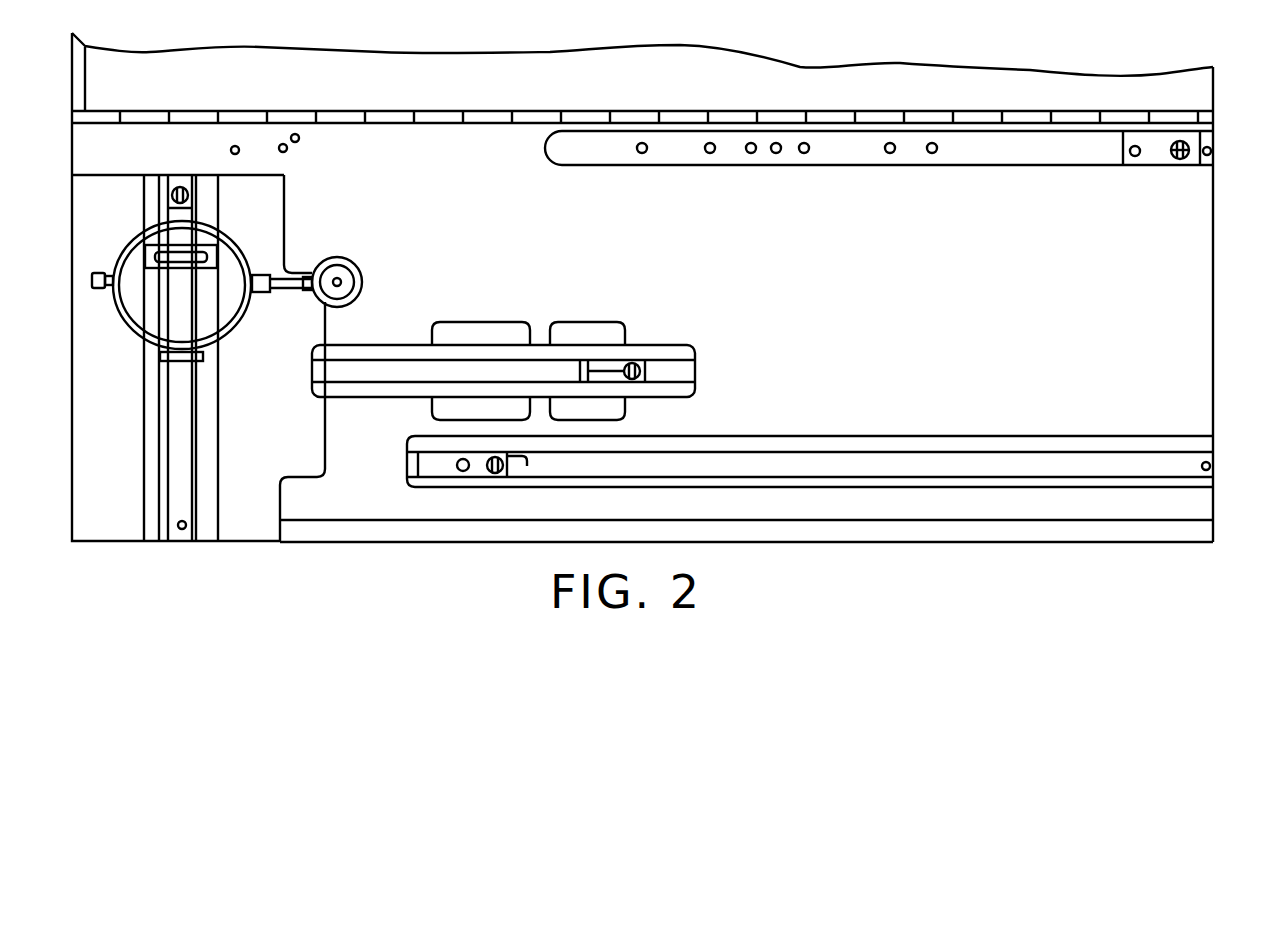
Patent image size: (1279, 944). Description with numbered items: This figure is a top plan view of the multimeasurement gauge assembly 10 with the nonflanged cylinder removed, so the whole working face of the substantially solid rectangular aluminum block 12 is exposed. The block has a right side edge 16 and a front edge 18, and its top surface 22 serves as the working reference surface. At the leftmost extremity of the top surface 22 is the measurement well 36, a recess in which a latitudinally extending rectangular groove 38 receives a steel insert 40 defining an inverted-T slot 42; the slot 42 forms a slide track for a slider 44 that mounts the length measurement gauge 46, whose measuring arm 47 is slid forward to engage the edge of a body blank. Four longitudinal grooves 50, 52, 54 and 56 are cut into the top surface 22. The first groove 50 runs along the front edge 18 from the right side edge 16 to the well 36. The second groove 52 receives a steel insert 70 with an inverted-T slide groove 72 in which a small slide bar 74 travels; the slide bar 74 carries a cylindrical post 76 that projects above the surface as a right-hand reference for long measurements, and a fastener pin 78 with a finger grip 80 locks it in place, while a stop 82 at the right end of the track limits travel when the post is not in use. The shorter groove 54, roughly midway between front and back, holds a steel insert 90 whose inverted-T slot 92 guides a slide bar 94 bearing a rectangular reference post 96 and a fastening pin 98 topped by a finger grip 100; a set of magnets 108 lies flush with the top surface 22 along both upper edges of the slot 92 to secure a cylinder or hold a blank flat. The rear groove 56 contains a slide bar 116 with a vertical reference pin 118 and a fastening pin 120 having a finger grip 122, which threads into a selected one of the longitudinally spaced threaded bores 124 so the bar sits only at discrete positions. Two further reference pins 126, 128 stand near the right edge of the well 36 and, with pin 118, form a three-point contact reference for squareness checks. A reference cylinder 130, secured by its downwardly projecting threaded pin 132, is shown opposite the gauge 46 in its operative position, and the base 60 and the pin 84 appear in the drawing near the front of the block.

The multimeasurement gauge assembly 10 is at (178, 50).
The aluminum block 12 is at (1213, 215).
The right side edge 16 is at (1213, 357).
The front edge 18 is at (105, 543).
The top surface 22 is at (488, 150).
The measurement well 36 is at (284, 211).
The groove 38 is at (220, 436).
The steel insert 40 is at (205, 415).
The slot 42 is at (191, 394).
The slider 44 is at (172, 197).
The length measurement gauge 46 is at (222, 340).
The measuring arm 47 is at (290, 292).
The longitudinally extending groove 50 is at (940, 517).
The second longitudinal groove 52 is at (723, 436).
The groove 54 is at (640, 348).
The groove 56 is at (838, 166).
The base top surface 60 is at (791, 532).
The steel insert 70 is at (789, 439).
The slide defining groove 72 is at (830, 456).
The slide bar 74 is at (457, 464).
The cylindrical post 76 is at (460, 472).
The fastener pin 78 is at (500, 475).
The finger grip 80 is at (532, 464).
The stop 82 is at (1211, 466).
The pin 84 is at (182, 530).
The steel insert 90 is at (538, 348).
The slot 92 is at (456, 394).
The slide bar 94 is at (605, 370).
The reference post 96 is at (595, 370).
The fastening pin 98 is at (641, 366).
The finger grip 100 is at (658, 376).
The magnets 108 is at (373, 358).
The slide bar 116 is at (1162, 152).
The reference pin 118 is at (1135, 146).
The fastening pin 120 is at (1185, 141).
The finger grip 122 is at (1172, 166).
The threaded bores 124 is at (642, 143).
The reference pin 126 is at (295, 134).
The reference pin 128 is at (283, 144).
The reference cylinder 130 is at (340, 258).
The threaded pin 132 is at (228, 147).